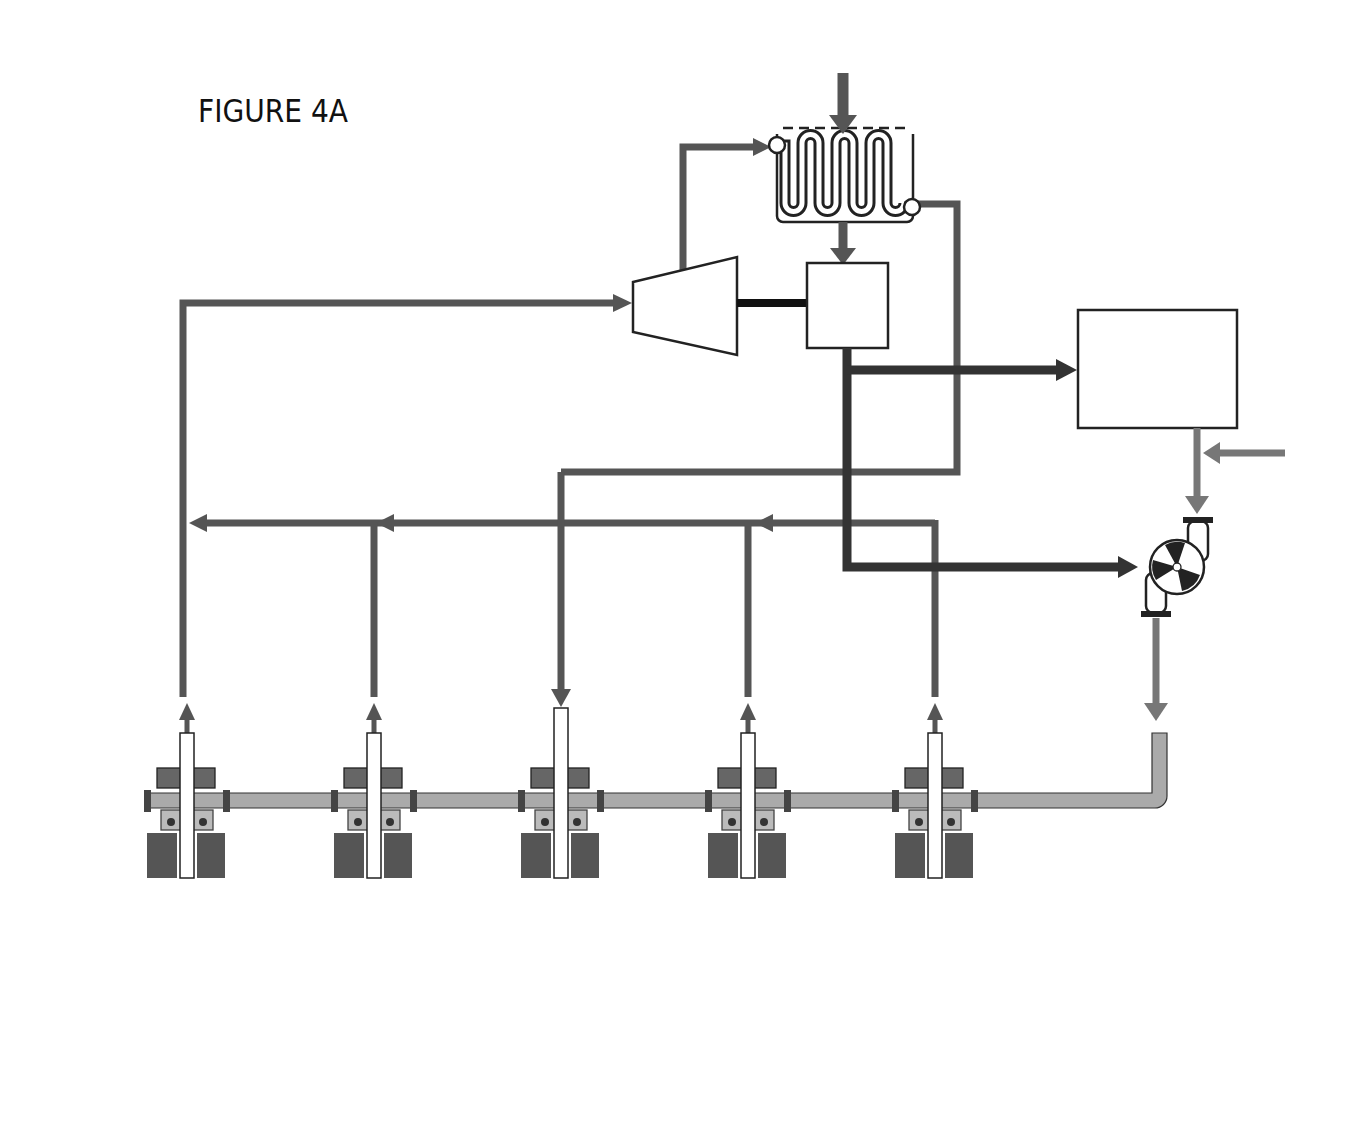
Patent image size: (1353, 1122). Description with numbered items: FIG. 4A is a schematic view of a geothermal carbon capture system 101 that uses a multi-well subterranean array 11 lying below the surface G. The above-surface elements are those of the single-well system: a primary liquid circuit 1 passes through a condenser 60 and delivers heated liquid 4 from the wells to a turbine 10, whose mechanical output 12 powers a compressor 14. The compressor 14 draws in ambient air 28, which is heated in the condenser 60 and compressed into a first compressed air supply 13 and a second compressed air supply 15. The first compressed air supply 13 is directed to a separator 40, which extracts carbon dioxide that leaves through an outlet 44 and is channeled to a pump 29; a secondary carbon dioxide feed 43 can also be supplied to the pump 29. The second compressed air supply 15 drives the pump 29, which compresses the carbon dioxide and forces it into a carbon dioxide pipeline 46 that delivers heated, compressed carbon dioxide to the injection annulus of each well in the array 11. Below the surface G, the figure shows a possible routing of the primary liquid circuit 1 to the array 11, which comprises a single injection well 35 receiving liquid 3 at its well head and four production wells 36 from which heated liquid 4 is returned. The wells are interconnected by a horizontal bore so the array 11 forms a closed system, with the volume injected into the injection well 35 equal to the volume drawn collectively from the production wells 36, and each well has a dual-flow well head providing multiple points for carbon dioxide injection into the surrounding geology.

The primary liquid circuit 1 is at (402, 390).
The liquid 3 is at (566, 567).
The heated liquid 4 is at (186, 373).
The turbine 10 is at (685, 306).
The multi-well subterranean array 11 is at (1092, 899).
The mechanical output 12 is at (783, 310).
The first compressed air supply 13 is at (1000, 375).
The compressor 14 is at (847, 305).
The second compressed air supply 15 is at (852, 408).
The ambient air 28 is at (843, 87).
The pump 29 is at (1198, 579).
The injection well 35 is at (596, 878).
The production wells 36 is at (222, 878).
The separator 40 is at (1157, 369).
The secondary carbon dioxide feed 43 is at (1264, 454).
The outlet 44 is at (1190, 465).
The carbon dioxide pipeline 46 is at (1150, 672).
The condenser 60 is at (776, 140).
The geothermal carbon capture system 101 is at (1140, 180).
The surface G is at (682, 837).